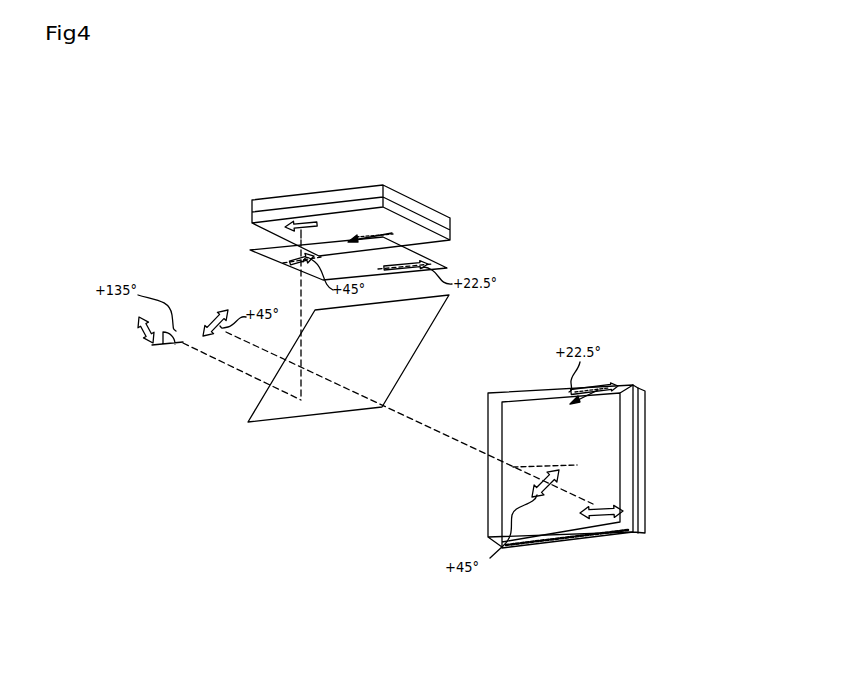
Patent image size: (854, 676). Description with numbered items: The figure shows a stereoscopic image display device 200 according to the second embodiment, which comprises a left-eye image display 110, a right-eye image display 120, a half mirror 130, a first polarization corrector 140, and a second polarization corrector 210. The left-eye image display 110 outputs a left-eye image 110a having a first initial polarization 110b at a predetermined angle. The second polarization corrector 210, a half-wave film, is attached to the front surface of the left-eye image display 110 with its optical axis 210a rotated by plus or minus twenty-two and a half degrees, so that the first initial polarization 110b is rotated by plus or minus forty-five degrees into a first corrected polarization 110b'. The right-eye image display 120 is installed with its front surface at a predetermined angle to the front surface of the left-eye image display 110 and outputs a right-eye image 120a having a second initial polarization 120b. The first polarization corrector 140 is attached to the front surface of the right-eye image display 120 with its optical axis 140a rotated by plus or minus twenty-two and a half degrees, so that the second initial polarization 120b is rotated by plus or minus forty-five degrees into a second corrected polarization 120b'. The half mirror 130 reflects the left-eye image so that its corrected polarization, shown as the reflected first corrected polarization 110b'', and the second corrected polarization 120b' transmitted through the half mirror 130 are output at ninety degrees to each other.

The stereoscopic image display device 200 is at (80, 107).
The left-eye image display 110 is at (400, 193).
The left-eye image 110a is at (352, 240).
The first initial polarization 110b is at (292, 197).
The first corrected polarization 110b' is at (249, 269).
The first corrected polarization reflected by the half mirror 110b'' is at (126, 331).
The right-eye image display 120 is at (645, 460).
The right-eye image 120a is at (590, 427).
The second initial polarization 120b is at (567, 540).
The second corrected polarization 120b' is at (363, 429).
The half mirror 130 is at (255, 423).
The first polarization corrector 140 is at (488, 517).
The optical axis of first polarization corrector 140a is at (587, 397).
The second polarization corrector 210 is at (262, 250).
The optical axis of second polarization corrector 210a is at (415, 262).